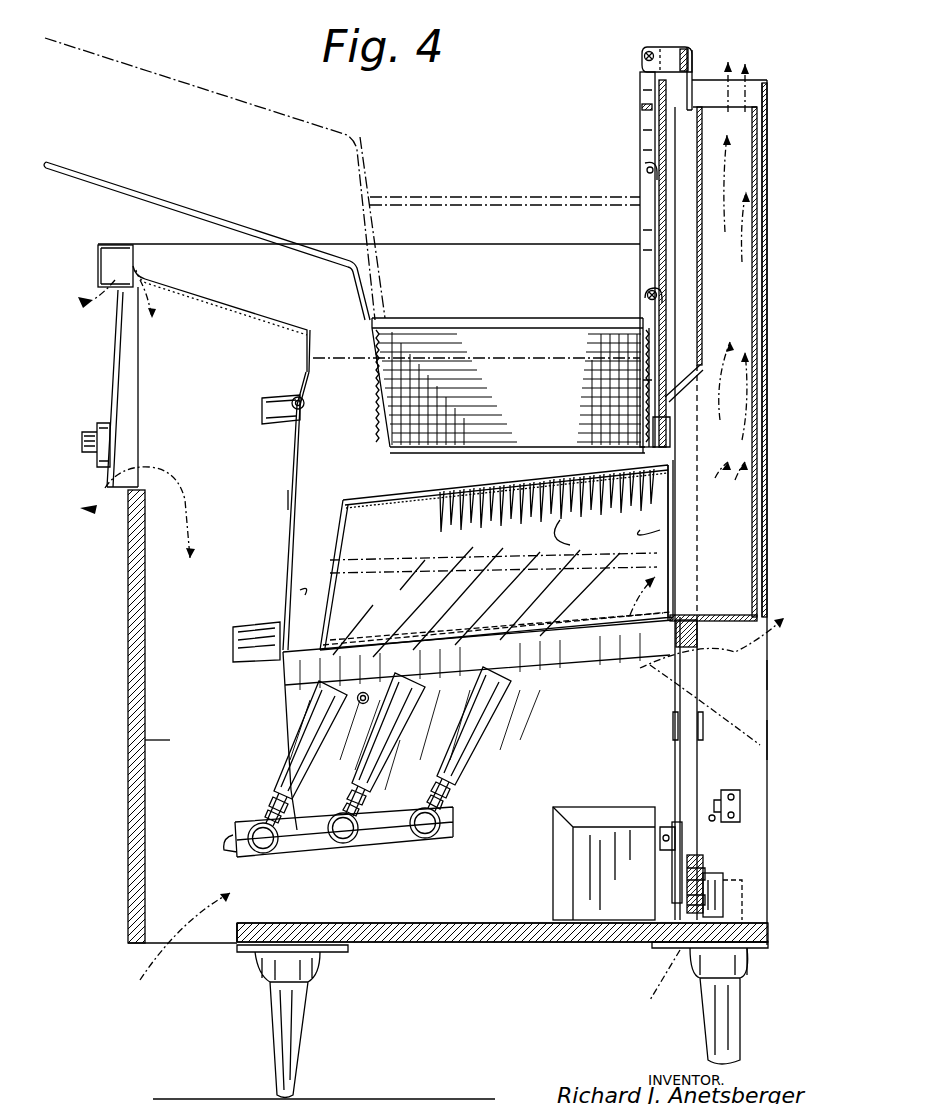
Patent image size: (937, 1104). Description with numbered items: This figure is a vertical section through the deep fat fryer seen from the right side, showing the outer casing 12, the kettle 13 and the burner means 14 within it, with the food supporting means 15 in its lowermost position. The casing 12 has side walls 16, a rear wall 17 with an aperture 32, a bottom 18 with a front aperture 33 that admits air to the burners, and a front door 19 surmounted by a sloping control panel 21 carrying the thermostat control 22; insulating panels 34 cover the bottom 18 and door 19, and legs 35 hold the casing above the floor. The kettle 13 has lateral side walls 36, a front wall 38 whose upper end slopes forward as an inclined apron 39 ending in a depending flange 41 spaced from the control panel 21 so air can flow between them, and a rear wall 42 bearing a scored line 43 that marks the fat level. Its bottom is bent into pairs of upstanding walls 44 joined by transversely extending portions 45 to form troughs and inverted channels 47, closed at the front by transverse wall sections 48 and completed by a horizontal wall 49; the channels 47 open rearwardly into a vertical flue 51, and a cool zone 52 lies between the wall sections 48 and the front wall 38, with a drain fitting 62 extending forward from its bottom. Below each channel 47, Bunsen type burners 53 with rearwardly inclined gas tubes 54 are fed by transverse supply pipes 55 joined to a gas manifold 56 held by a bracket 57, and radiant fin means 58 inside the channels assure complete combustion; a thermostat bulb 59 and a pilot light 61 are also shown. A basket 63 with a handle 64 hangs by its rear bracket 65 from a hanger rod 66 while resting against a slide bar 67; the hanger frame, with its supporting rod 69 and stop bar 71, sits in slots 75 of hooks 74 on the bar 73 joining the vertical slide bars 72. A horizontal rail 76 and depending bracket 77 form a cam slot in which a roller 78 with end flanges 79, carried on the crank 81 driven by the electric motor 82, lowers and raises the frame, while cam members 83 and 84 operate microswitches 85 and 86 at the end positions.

The outer casing 12 is at (127, 872).
The kettle 13 is at (290, 498).
The burner means 14 is at (292, 730).
The food supporting means 15 is at (640, 97).
The side walls 16 is at (170, 752).
The rear wall 17 is at (768, 740).
The bottom 18 is at (482, 944).
The door 19 is at (127, 735).
The control panel 21 is at (118, 335).
The thermostat control 22 is at (82, 440).
The aperture 32 is at (768, 673).
The aperture 33 is at (230, 930).
The insulating panels 34 is at (135, 640).
The legs 35 is at (285, 1040).
The lateral side walls 36 is at (452, 255).
The front wall 38 is at (293, 465).
The inclined apron 39 is at (232, 305).
The depending flange 41 is at (98, 265).
The rear wall 42 is at (667, 322).
The scored line 43 is at (670, 354).
The upstanding walls 44 is at (358, 513).
The transversely extending portion 45 is at (418, 500).
The inverted channels 47 is at (446, 608).
The transverse wall sections 48 is at (347, 556).
The horizontal wall 49 is at (307, 633).
The flue 51 is at (735, 410).
The cool zone 52 is at (302, 592).
The Bunsen type burners 53 is at (300, 760).
The gas tube 54 is at (263, 798).
The supply pipe 55 is at (247, 858).
The gas manifold 56 is at (297, 847).
The bracket 57 is at (290, 705).
The radiant fin means 58 is at (660, 530).
The thermostat bulb 59 is at (306, 403).
The pilot light 61 is at (362, 705).
The drain fitting 62 is at (235, 648).
The basket 63 is at (488, 327).
The handle 64 is at (232, 212).
The bracket 65 is at (652, 290).
The hanger rod 66 is at (647, 297).
The slide bar 67 is at (672, 465).
The supporting rod 69 is at (642, 60).
The stop bar 71 is at (640, 108).
The vertical slide bars 72 is at (690, 672).
The transversely extending bar 73 is at (693, 56).
The brackets 74 is at (667, 52).
The slot 75 is at (648, 48).
The horizontal rail 76 is at (688, 858).
The bracket 77 is at (697, 913).
The roller 78 is at (703, 876).
The end flanges 79 is at (700, 872).
The crank 81 is at (683, 860).
The electric motor 82 is at (605, 807).
The cam member 83 is at (748, 955).
The cam member 84 is at (720, 886).
The microswitch 85 is at (745, 906).
The microswitch 86 is at (741, 800).